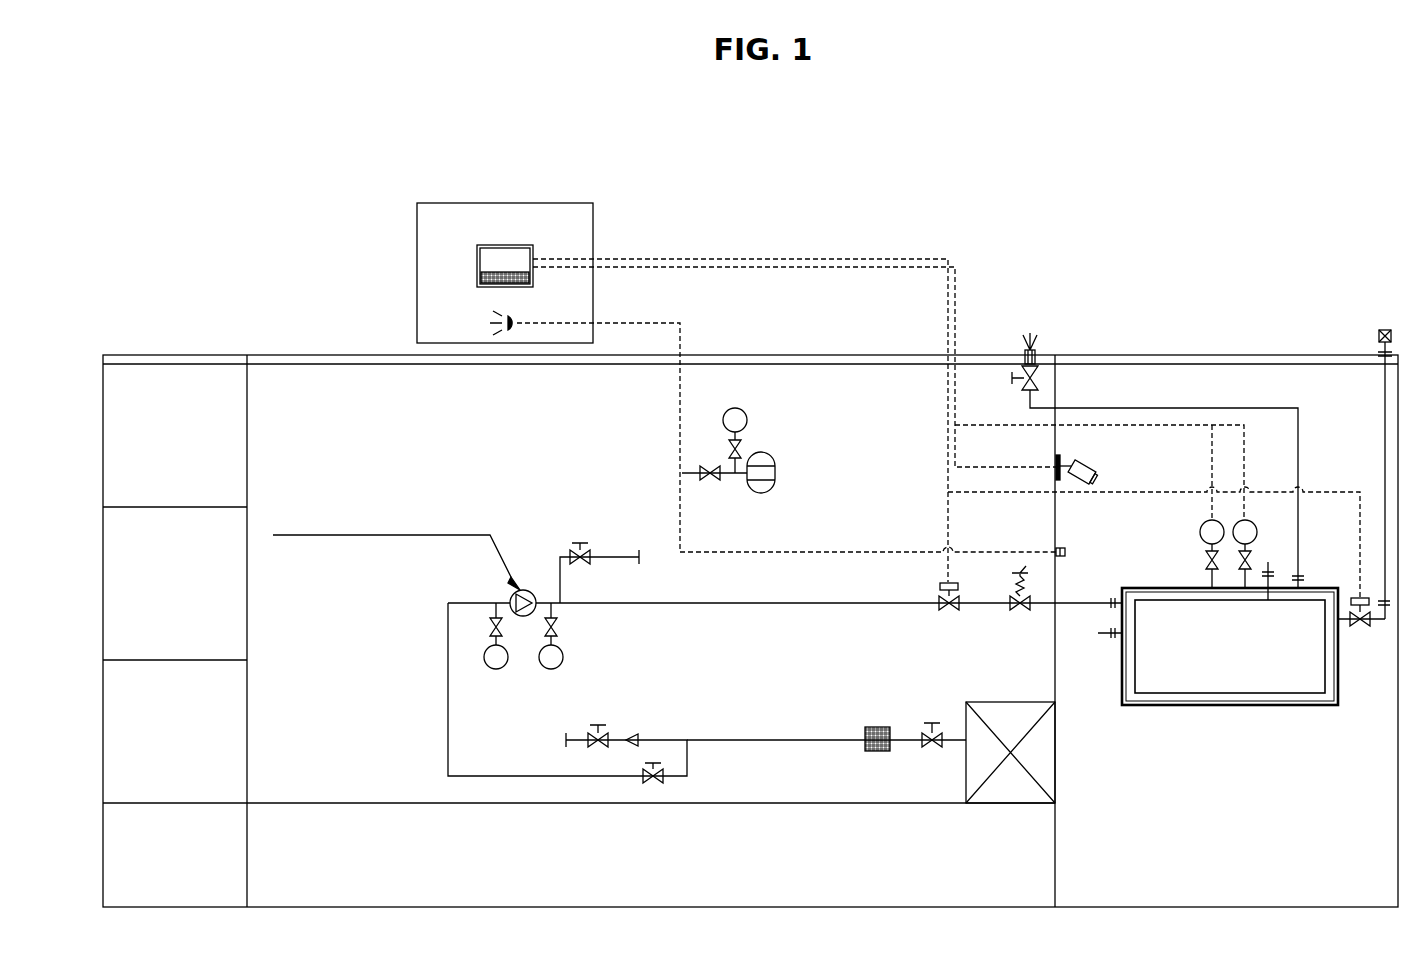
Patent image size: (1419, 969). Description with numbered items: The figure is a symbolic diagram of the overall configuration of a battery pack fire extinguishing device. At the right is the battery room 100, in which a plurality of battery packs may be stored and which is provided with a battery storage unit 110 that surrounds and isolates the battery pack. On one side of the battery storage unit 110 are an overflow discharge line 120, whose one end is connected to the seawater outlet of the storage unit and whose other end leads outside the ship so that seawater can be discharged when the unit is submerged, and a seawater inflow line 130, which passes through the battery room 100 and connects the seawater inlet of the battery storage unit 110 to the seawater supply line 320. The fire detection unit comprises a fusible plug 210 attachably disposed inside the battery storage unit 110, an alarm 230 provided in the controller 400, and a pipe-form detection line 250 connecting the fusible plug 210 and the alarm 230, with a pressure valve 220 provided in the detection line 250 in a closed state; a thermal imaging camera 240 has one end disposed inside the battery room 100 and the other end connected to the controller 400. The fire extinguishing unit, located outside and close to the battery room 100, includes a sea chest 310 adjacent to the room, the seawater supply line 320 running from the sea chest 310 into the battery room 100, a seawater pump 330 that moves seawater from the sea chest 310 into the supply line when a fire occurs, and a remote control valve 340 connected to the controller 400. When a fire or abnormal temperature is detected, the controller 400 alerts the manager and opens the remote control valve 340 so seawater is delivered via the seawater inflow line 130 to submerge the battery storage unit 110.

The battery room 100 is at (1305, 375).
The battery storage unit 110 is at (1320, 582).
The overflow discharge line 120 is at (1202, 407).
The seawater inflow line 130 is at (1100, 608).
The fusible plug 210 is at (1066, 553).
The pressure valve 220 is at (1018, 615).
The alarm 230 is at (506, 320).
The thermal imaging camera 240 is at (1092, 468).
The detection line 250 is at (826, 552).
The sea chest 310 is at (1012, 805).
The seawater supply line 320 is at (713, 605).
The seawater pump 330 is at (522, 588).
The remote control valve 340 is at (945, 615).
The controller 400 is at (505, 203).